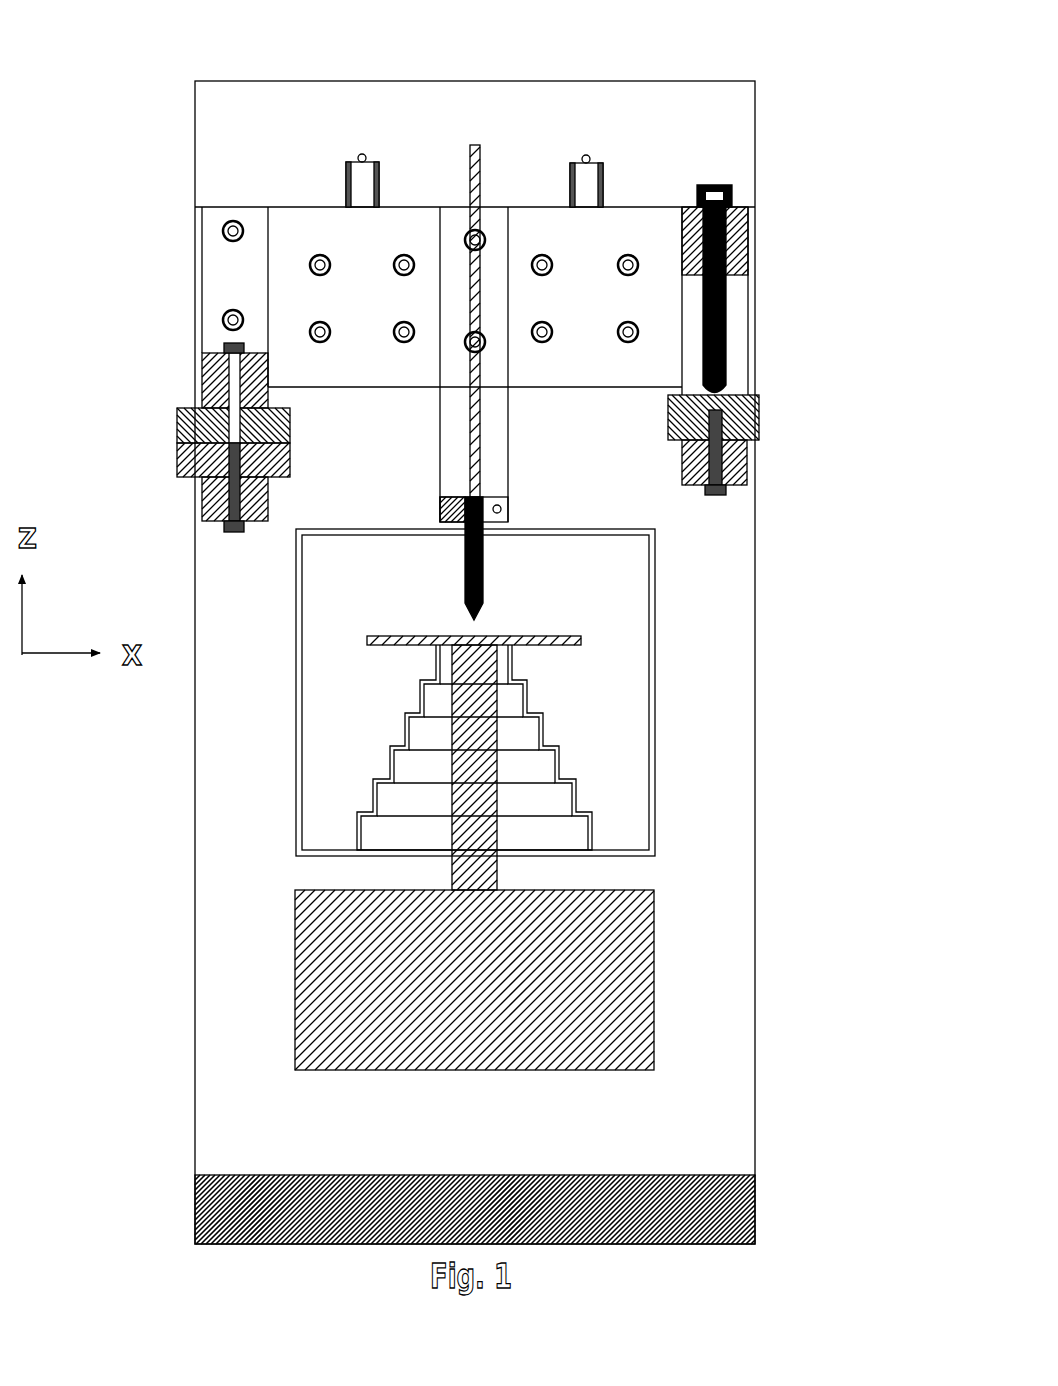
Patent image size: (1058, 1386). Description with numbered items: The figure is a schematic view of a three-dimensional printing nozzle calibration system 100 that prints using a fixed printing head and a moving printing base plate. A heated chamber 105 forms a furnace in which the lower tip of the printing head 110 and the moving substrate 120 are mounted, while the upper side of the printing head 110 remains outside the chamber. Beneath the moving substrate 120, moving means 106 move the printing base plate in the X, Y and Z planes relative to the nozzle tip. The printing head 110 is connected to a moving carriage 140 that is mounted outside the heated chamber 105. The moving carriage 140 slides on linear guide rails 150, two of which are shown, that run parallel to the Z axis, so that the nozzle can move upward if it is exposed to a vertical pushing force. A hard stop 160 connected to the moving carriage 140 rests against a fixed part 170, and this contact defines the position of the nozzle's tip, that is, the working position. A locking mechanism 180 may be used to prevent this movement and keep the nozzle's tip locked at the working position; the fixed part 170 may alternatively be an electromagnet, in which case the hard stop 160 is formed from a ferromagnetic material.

The 3D printing nozzle calibration system 100 is at (833, 102).
The heated chamber 105 is at (655, 716).
The moving means 106 is at (617, 951).
The printing head 110 is at (485, 563).
The moving substrate 120 is at (582, 639).
The moving carriage 140 is at (497, 227).
The linear guide rail 150 is at (365, 175).
The hard stop 160 is at (727, 337).
The fixed part 170 is at (746, 412).
The locking mechanism 180 is at (165, 430).